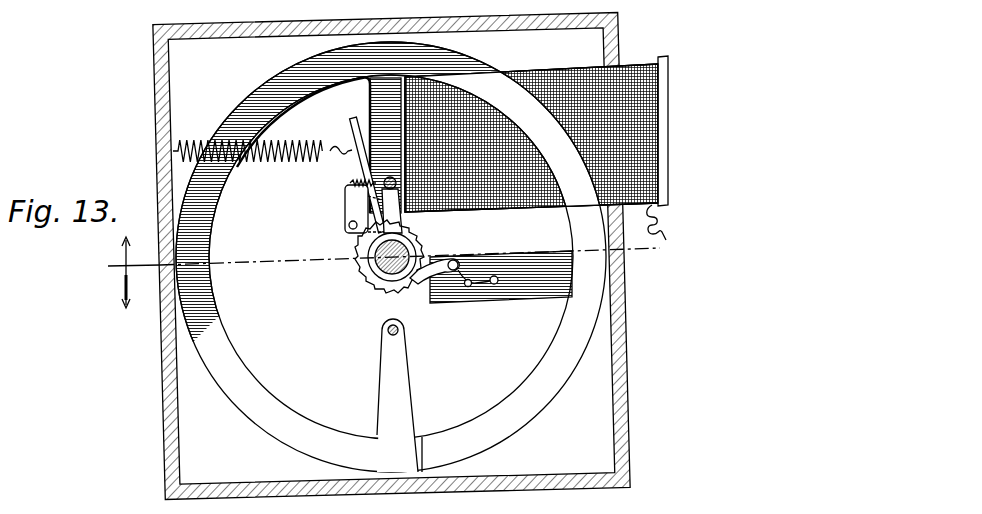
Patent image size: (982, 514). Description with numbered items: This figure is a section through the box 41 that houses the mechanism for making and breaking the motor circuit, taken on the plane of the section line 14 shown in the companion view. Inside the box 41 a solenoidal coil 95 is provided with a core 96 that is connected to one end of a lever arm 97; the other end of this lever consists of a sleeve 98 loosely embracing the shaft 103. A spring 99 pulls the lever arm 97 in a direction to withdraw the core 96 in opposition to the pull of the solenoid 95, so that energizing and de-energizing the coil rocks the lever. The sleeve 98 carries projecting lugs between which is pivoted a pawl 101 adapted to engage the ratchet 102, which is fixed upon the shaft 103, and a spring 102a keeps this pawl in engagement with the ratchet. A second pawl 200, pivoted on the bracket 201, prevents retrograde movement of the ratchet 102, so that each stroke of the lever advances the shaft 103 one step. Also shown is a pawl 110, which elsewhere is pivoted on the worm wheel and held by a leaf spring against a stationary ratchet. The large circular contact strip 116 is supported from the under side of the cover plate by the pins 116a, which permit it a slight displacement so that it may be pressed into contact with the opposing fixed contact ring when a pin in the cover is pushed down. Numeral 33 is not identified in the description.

The section line 14 is at (367, 272).
The spring 33 is at (674, 229).
The box 41 is at (367, 255).
The solenoidal coil 95 is at (638, 63).
The core 96 is at (356, 122).
The lever arm 97 is at (347, 123).
The sleeve 98 is at (407, 284).
The spring 99 is at (272, 166).
The pawl 101 is at (399, 217).
The ratchet 102 is at (432, 256).
The spring 102a is at (350, 183).
The shaft 103 is at (384, 266).
The pawl 110 is at (346, 241).
The contact strip 116 is at (417, 257).
The pins 116a is at (420, 347).
The pawl 200 is at (458, 302).
The bracket 201 is at (538, 247).